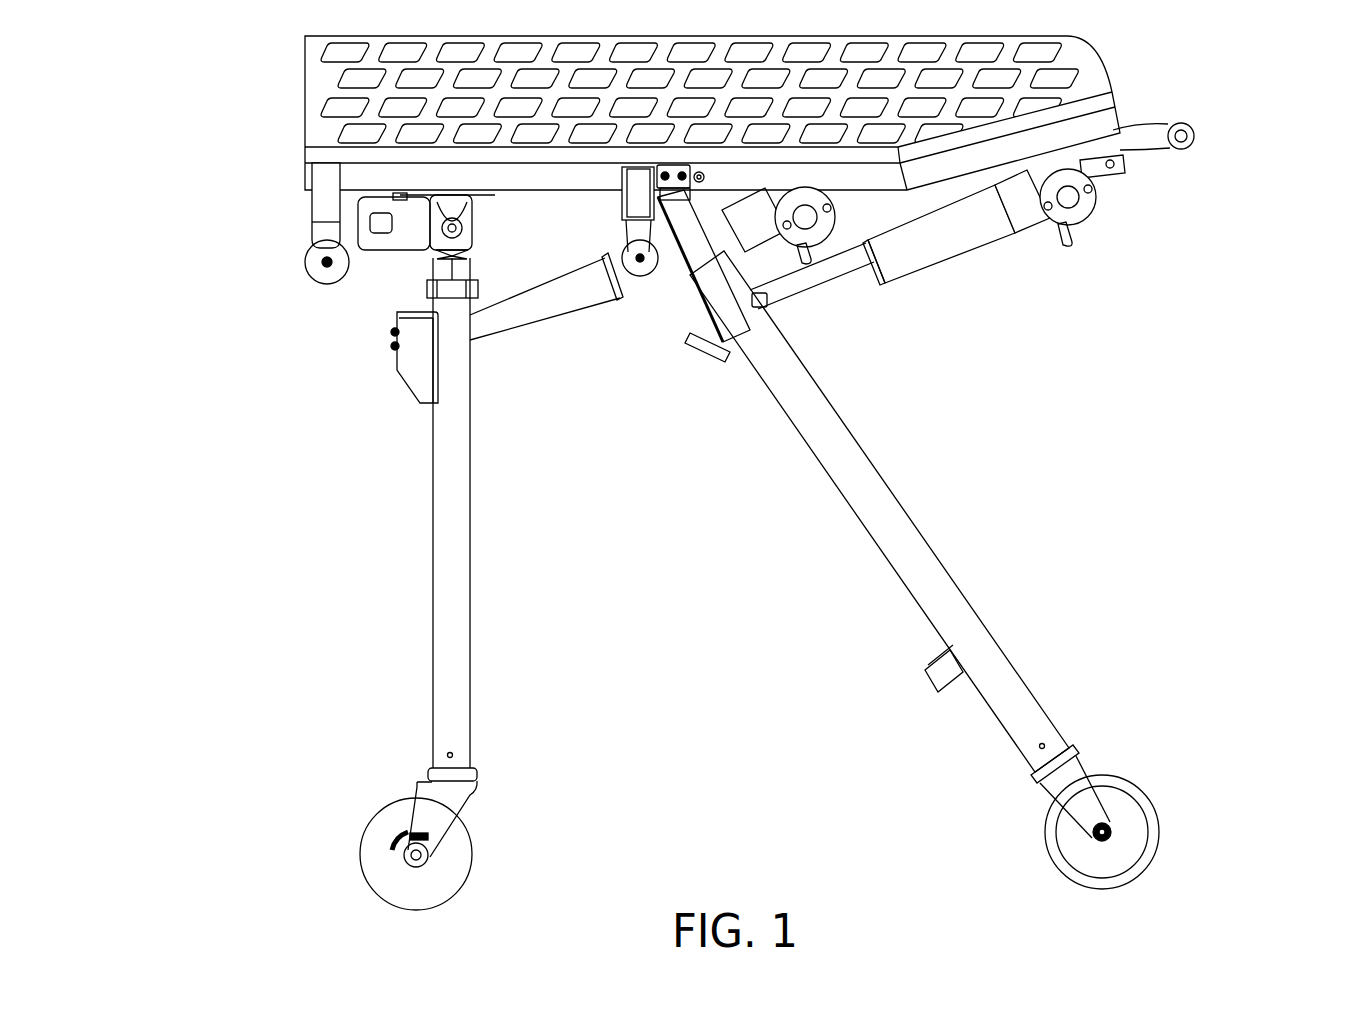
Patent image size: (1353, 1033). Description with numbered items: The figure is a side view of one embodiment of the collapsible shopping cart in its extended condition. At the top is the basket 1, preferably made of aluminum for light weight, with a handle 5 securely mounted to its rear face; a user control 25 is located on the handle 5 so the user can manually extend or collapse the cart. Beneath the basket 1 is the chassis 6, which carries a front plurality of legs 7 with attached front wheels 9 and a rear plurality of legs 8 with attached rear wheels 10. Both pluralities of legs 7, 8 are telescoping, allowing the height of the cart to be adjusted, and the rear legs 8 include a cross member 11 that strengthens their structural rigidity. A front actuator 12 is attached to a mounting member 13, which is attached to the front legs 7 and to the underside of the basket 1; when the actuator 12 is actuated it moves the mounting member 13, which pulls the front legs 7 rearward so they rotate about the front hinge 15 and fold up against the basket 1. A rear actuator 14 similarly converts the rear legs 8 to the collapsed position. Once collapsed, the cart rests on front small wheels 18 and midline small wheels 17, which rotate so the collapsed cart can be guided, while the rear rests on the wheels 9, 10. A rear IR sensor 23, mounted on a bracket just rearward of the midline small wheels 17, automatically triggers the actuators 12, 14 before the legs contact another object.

The basket 1 is at (303, 70).
The handle 5 is at (1140, 123).
The chassis 6 is at (303, 172).
The front plurality of legs 7 is at (472, 525).
The rear plurality of legs 8 is at (905, 515).
The front wheels 9 is at (480, 855).
The rear wheels 10 is at (1133, 778).
The cross member 11 is at (923, 687).
The front actuator 12 is at (545, 313).
The mounting member 13 is at (397, 358).
The rear actuator 14 is at (1098, 220).
The front hinge 15 is at (437, 250).
The midline small wheels 17 is at (657, 287).
The front small wheels 18 is at (310, 278).
The rear IR sensor 23 is at (700, 203).
The user control 25 is at (1197, 126).